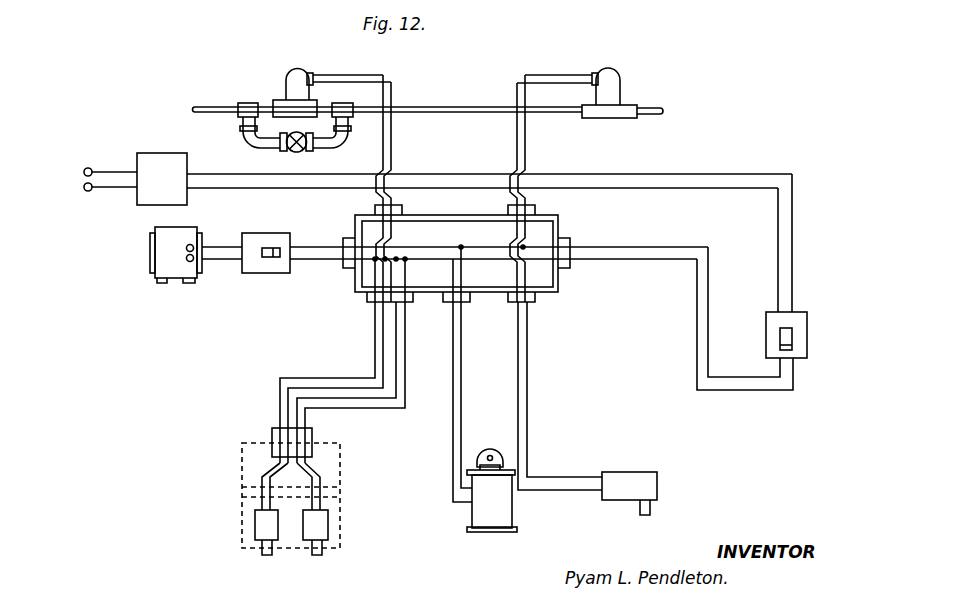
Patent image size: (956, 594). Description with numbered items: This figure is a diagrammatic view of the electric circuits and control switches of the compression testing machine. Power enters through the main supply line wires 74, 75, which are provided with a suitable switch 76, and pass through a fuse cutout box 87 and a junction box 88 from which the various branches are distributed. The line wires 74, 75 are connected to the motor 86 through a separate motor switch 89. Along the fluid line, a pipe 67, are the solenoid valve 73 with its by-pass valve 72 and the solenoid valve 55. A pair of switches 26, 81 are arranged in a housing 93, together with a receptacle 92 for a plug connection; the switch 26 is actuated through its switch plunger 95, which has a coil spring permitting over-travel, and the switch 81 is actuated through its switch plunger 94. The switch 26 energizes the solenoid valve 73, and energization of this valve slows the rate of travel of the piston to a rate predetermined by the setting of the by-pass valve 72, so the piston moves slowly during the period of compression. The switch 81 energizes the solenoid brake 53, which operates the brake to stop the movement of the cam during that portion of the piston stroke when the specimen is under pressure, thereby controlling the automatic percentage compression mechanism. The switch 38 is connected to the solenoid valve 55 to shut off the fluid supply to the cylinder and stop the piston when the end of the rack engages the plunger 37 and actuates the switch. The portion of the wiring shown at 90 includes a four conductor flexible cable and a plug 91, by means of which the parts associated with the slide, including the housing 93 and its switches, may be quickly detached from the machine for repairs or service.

The switch 26 is at (255, 520).
The plunger 37 is at (648, 507).
The switch 38 is at (643, 485).
The solenoid brake 53 is at (472, 515).
The solenoid valve 55 is at (612, 87).
The pipe 67 is at (450, 107).
The by-pass valve 72 is at (292, 149).
The solenoid valve 73 is at (284, 86).
The line wire 74 is at (106, 170).
The line wire 75 is at (103, 190).
The switch 76 is at (800, 340).
The switch 81 is at (323, 527).
The motor 86 is at (160, 260).
The fuse cutout box 87 is at (160, 160).
The junction box 88 is at (558, 227).
The motor switch 89 is at (263, 268).
The wiring portion 90 is at (367, 372).
The plug 91 is at (277, 432).
The receptacle 92 is at (272, 440).
The housing 93 is at (243, 461).
The switch plunger 94 is at (320, 557).
The switch plunger 95 is at (262, 555).